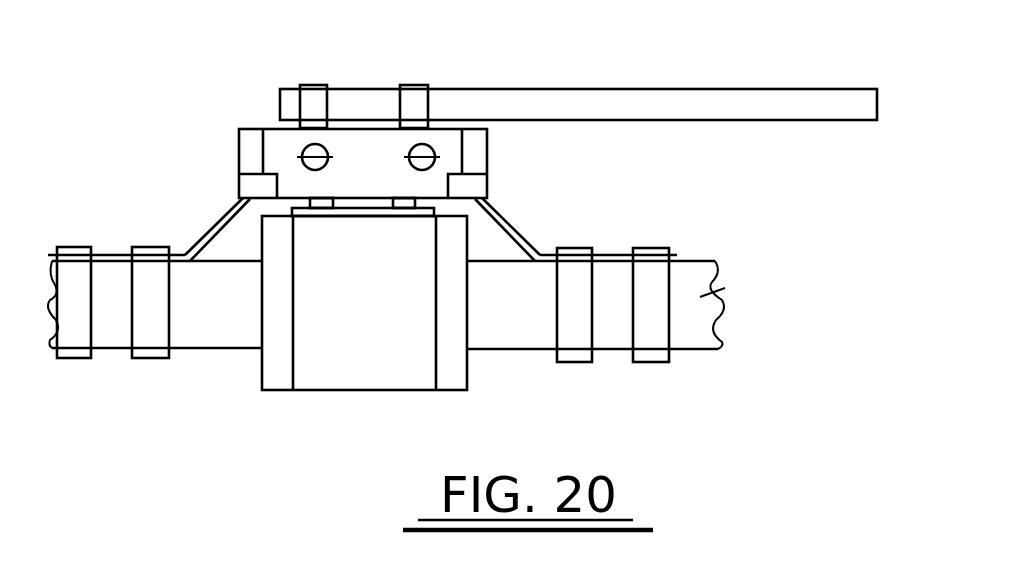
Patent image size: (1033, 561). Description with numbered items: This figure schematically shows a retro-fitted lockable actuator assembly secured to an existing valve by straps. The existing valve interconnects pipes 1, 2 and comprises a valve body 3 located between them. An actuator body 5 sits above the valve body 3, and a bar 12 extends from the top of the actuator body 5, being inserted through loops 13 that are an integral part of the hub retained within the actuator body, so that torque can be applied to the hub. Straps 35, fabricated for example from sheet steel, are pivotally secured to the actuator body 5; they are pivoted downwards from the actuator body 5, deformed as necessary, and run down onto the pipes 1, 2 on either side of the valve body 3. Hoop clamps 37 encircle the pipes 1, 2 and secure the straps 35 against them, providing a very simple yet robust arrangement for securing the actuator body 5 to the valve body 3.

The pipe 1 is at (112, 333).
The pipe 2 is at (683, 327).
The valve body 3 is at (365, 352).
The actuator body 5 is at (285, 150).
The bar 12 is at (637, 103).
The loops 13 is at (413, 95).
The straps 35 is at (203, 240).
The hoop clamps 37 is at (78, 270).